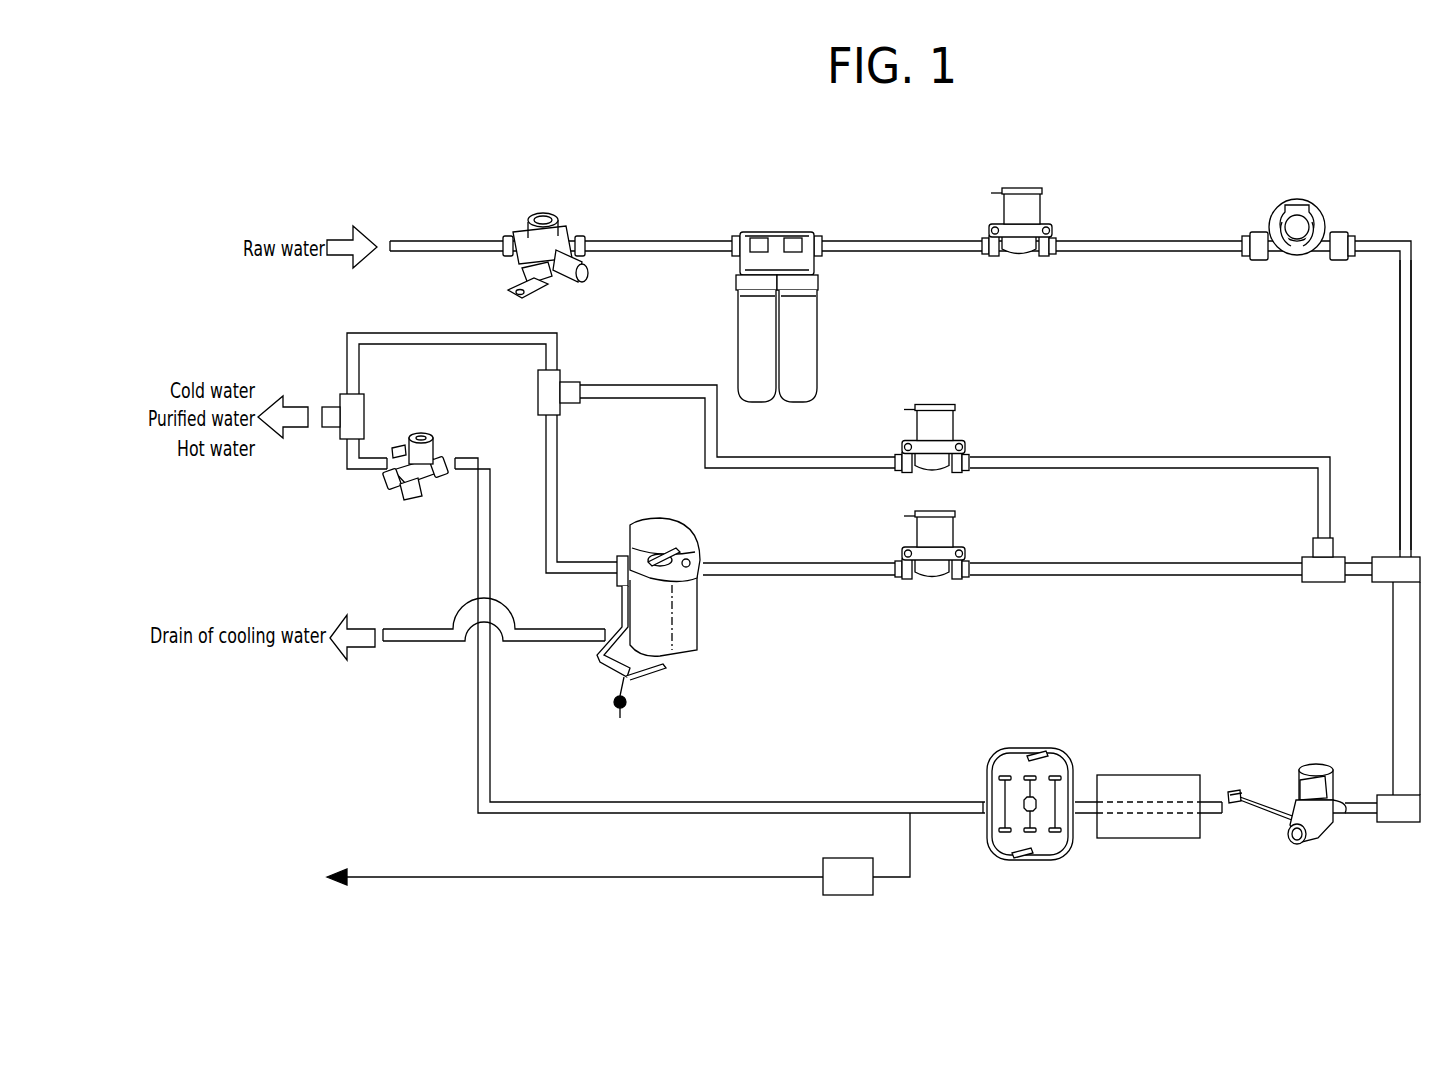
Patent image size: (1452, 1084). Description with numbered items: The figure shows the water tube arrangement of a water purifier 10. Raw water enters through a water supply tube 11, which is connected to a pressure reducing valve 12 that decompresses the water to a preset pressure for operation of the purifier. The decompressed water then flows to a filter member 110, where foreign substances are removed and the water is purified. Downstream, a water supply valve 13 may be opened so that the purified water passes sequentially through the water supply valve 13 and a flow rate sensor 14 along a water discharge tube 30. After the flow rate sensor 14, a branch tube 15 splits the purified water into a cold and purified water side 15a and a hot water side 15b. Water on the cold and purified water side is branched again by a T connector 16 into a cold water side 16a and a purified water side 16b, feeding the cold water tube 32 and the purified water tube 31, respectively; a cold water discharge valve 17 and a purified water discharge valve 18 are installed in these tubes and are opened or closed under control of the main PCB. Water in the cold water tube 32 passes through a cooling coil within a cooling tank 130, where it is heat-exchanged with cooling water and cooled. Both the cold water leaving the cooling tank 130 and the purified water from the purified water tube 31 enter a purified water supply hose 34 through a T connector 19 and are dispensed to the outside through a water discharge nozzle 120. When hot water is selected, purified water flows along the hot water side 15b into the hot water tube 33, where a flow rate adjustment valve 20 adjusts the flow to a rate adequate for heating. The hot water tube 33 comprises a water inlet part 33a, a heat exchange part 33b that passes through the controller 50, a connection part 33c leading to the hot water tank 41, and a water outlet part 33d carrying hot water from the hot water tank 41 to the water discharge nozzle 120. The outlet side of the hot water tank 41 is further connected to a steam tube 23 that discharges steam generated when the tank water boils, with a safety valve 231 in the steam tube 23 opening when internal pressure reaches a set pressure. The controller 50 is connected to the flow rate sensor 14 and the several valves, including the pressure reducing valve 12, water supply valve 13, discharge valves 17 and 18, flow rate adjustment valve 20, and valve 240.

The water purifier 10 is at (733, 134).
The water supply tube 11 is at (458, 242).
The pressure reducing valve 12 is at (563, 218).
The filter member 110 is at (783, 217).
The water supply valve 13 is at (1030, 178).
The flow rate sensor 14 is at (1310, 190).
The water discharge tube 30 is at (1400, 333).
The purified water supply hose 34 is at (462, 330).
The valve 240 is at (423, 430).
The T connector 19 is at (536, 389).
The water discharge nozzle 120 is at (338, 437).
The cooling tank 130 is at (638, 520).
The purified water discharge valve 18 is at (968, 412).
The purified water tube 31 is at (1150, 456).
The cold water discharge valve 17 is at (970, 540).
The cold water tube 32 is at (1150, 562).
The T connector 16 is at (1298, 560).
The cold water side 16a is at (1305, 557).
The purified water side 16b is at (1333, 550).
The branch tube 15 is at (1370, 665).
The cold and purified water side 15a is at (1385, 556).
The hot water side 15b is at (1397, 823).
The hot water tank 41 is at (1052, 745).
The controller 50 is at (1148, 774).
The flow rate adjustment valve 20 is at (1328, 842).
The hot water tube 33 is at (1167, 876).
The water inlet part 33a is at (1217, 856).
The heat exchange part 33b is at (1143, 838).
The connection part 33c is at (1086, 815).
The water outlet part 33d is at (970, 815).
The steam tube 23 is at (610, 878).
The safety valve 231 is at (847, 896).